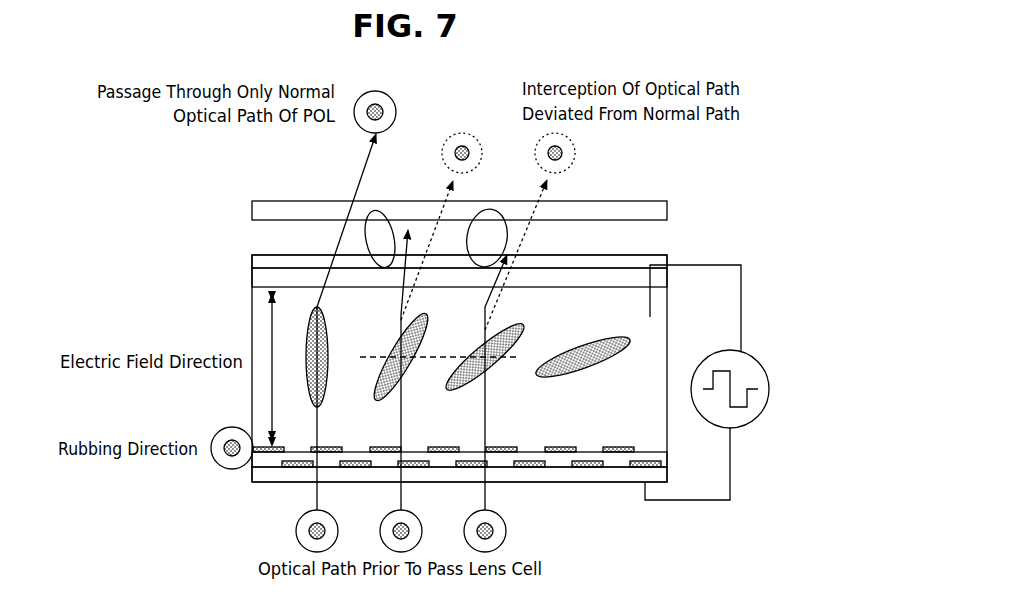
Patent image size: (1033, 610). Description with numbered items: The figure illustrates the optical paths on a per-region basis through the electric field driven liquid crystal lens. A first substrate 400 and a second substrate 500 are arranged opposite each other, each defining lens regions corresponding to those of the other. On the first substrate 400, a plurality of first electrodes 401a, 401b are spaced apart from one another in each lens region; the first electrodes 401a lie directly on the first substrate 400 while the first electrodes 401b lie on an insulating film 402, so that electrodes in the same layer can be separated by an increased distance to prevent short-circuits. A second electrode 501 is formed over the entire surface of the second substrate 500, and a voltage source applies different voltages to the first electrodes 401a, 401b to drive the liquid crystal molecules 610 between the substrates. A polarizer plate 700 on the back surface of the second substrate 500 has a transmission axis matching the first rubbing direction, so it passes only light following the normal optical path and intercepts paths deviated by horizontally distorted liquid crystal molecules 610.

The polarizer plate 700 is at (667, 211).
The second substrate 500 is at (252, 261).
The second electrode 501 is at (252, 281).
The liquid crystal molecules 610 is at (594, 368).
The first electrodes 401b is at (266, 455).
The first electrodes 401a is at (530, 467).
The first substrate 400 is at (583, 482).
The insulating film 402 is at (620, 468).